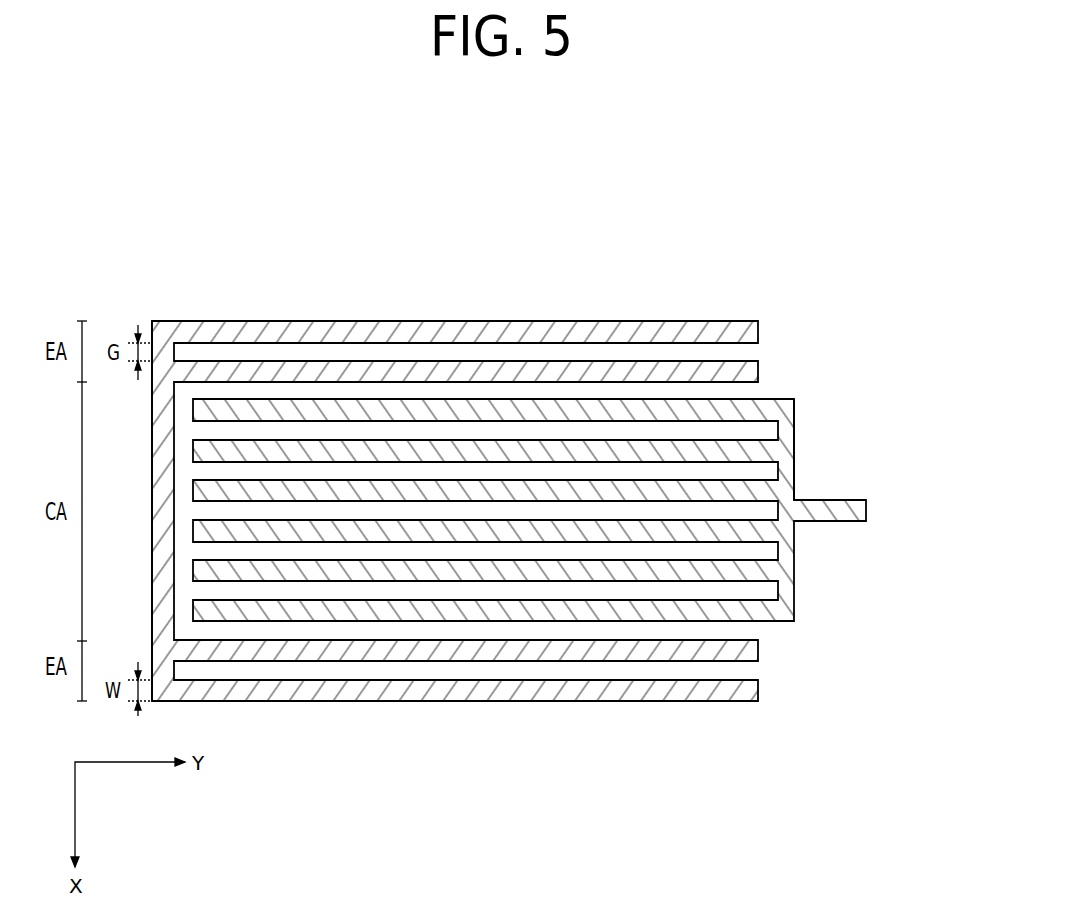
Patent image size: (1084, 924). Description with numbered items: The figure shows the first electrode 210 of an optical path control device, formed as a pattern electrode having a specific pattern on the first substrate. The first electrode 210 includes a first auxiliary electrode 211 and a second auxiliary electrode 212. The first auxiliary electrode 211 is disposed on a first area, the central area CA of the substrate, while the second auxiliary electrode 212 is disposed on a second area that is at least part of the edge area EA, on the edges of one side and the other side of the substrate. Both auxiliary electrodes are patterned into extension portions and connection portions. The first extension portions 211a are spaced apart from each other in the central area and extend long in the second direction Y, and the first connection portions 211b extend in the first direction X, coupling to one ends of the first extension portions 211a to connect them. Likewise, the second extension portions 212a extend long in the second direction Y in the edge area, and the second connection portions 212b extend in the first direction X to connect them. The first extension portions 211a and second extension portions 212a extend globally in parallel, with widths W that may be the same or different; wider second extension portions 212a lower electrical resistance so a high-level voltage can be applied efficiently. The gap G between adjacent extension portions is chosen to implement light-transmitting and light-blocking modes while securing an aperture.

The first electrode 210 is at (557, 440).
The first auxiliary electrode 211 is at (578, 510).
The first extension portions 211a is at (736, 437).
The first connection portions 211b is at (795, 472).
The second auxiliary electrode 212 is at (455, 460).
The second extension portions 212a is at (347, 323).
The second connection portions 212b is at (174, 352).